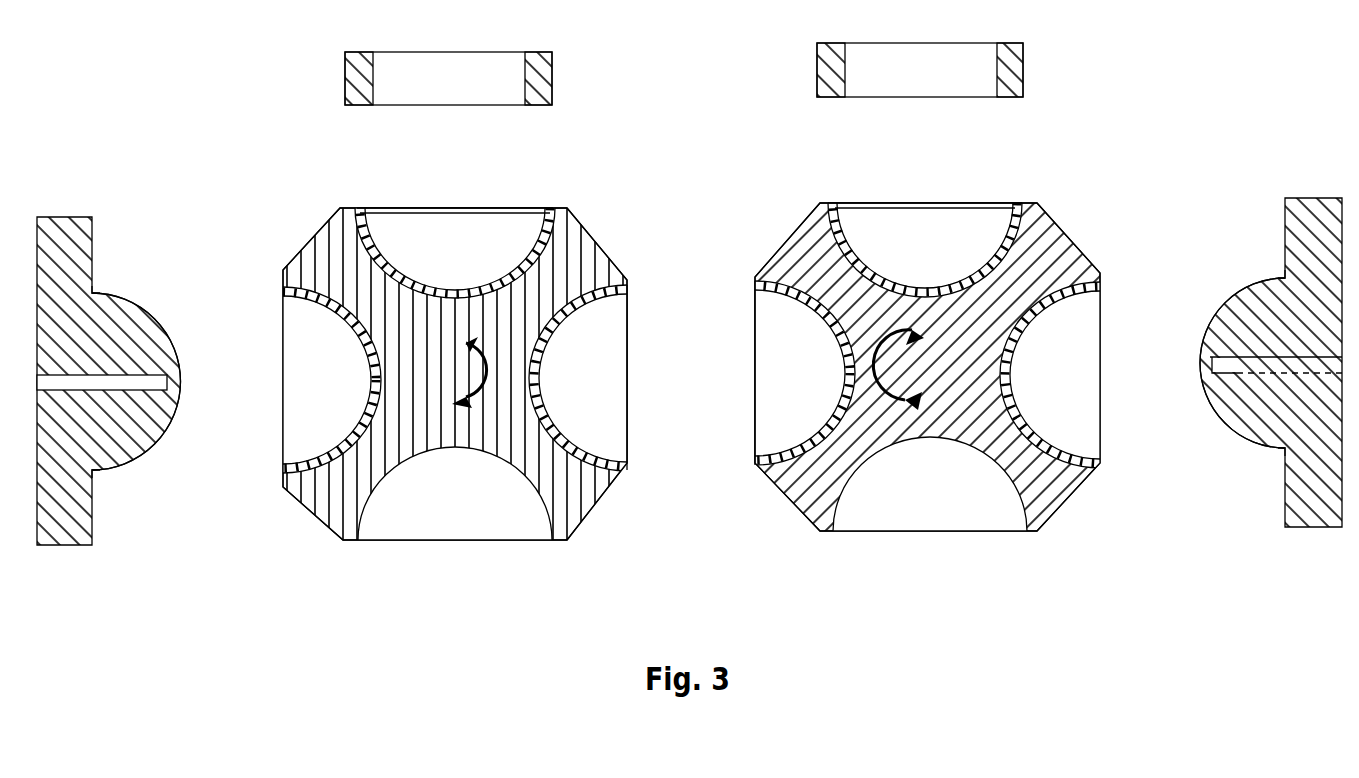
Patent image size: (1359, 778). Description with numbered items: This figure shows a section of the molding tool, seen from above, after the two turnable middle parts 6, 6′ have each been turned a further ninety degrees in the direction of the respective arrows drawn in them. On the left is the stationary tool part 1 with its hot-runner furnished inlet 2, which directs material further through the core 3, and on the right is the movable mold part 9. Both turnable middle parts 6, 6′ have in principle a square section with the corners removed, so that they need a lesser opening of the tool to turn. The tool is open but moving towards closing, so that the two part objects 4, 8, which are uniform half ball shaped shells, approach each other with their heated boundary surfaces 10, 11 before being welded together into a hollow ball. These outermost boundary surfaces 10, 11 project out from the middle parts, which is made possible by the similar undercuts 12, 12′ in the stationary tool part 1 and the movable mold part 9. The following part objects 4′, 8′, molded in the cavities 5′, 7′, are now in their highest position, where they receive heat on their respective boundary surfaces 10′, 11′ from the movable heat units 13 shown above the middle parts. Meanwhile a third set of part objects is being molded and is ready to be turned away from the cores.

The stationary tool part 1 is at (87, 270).
The inlet 2 is at (147, 385).
The core 3 is at (163, 365).
The first part object 4 is at (553, 430).
The following part object 4′ is at (380, 256).
The cavity 5′ is at (523, 257).
The turnable middle part 6 is at (600, 255).
The turnable middle part 6′ is at (768, 258).
The cavity 7′ is at (993, 252).
The part object 8 is at (833, 413).
The following part object 8′ is at (843, 252).
The movable mold part 9 is at (1293, 230).
The boundary surface 10 is at (630, 283).
The boundary surface 10′ is at (372, 210).
The boundary surface 11 is at (768, 278).
The boundary surface 11′ is at (838, 202).
The undercut 12 is at (95, 295).
The undercut 12′ is at (1285, 275).
The movable heat unit 13 is at (363, 87).